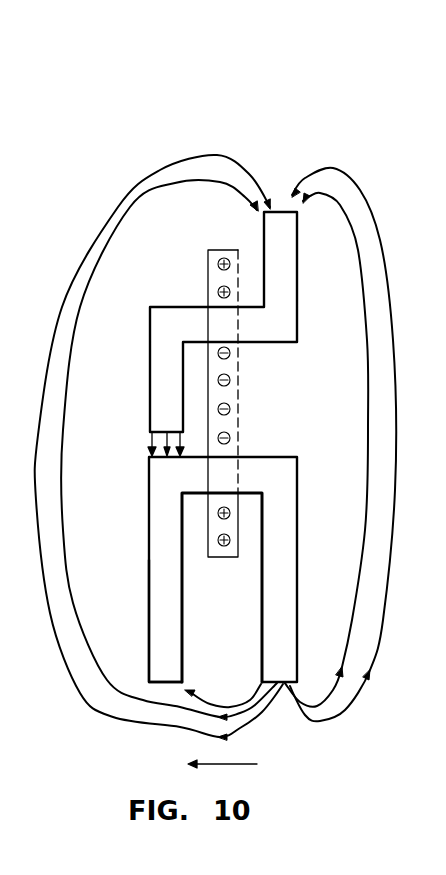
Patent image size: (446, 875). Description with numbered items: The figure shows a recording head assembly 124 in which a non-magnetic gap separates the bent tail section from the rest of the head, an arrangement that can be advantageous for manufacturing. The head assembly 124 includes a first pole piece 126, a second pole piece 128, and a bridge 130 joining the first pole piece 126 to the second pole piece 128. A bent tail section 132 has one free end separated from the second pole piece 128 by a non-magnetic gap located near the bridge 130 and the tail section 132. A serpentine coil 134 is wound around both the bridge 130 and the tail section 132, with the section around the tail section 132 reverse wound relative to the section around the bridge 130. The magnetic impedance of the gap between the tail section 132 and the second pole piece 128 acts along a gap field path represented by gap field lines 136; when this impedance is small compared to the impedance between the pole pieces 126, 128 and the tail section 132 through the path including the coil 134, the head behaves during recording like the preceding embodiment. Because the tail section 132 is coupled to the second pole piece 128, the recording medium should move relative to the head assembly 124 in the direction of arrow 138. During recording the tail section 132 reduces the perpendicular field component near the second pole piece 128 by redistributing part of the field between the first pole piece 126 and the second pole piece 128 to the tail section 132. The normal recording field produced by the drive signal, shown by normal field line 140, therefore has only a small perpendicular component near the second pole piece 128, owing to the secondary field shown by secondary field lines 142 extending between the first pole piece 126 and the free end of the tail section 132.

The recording head assembly 124 is at (285, 133).
The first pole piece 126 is at (298, 570).
The second pole piece 128 is at (148, 583).
The bridge 130 is at (264, 457).
The bent tail section 132 is at (299, 307).
The serpentine coil 134 is at (208, 258).
The gap field lines 136 is at (180, 434).
The arrow 138 is at (238, 764).
The normal field line 140 is at (208, 692).
The secondary field lines 142 is at (135, 232).